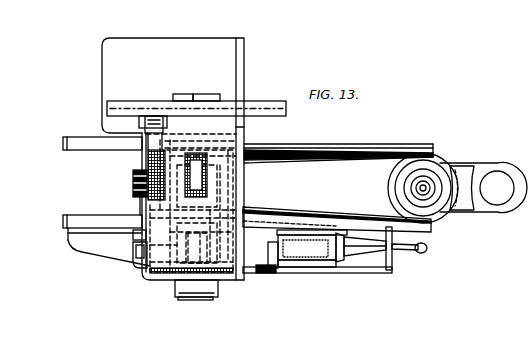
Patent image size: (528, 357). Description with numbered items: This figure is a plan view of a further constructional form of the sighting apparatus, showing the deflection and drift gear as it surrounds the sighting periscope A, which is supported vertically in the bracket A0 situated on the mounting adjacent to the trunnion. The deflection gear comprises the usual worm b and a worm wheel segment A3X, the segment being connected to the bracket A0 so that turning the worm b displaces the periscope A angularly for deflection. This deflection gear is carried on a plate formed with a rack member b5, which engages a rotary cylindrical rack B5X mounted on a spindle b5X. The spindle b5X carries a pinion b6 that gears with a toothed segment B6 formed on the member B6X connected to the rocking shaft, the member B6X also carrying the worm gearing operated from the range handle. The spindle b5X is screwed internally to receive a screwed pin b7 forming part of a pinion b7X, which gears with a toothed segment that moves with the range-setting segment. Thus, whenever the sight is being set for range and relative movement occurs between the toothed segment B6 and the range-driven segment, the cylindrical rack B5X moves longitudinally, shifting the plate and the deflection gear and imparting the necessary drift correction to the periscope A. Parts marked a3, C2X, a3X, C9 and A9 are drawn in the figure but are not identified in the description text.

The upper side bar a3 is at (80, 142).
The rack member b5 is at (120, 132).
The pinion b7X is at (141, 165).
The screwed pin b7 is at (160, 116).
The rotary cylindrical rack B5X is at (136, 178).
The worm b is at (210, 188).
The toothed segment B6 is at (86, 222).
The member B6X is at (82, 246).
The pinion b6 is at (133, 236).
The spindle b5X is at (150, 252).
The worm wheel segment A3X is at (291, 178).
The lower arm C2X is at (302, 222).
The base block a3X is at (280, 262).
The lever handle C9 is at (424, 252).
The pulley wheel A9 is at (421, 189).
The bracket A0 is at (444, 168).
The sighting periscope A is at (496, 186).